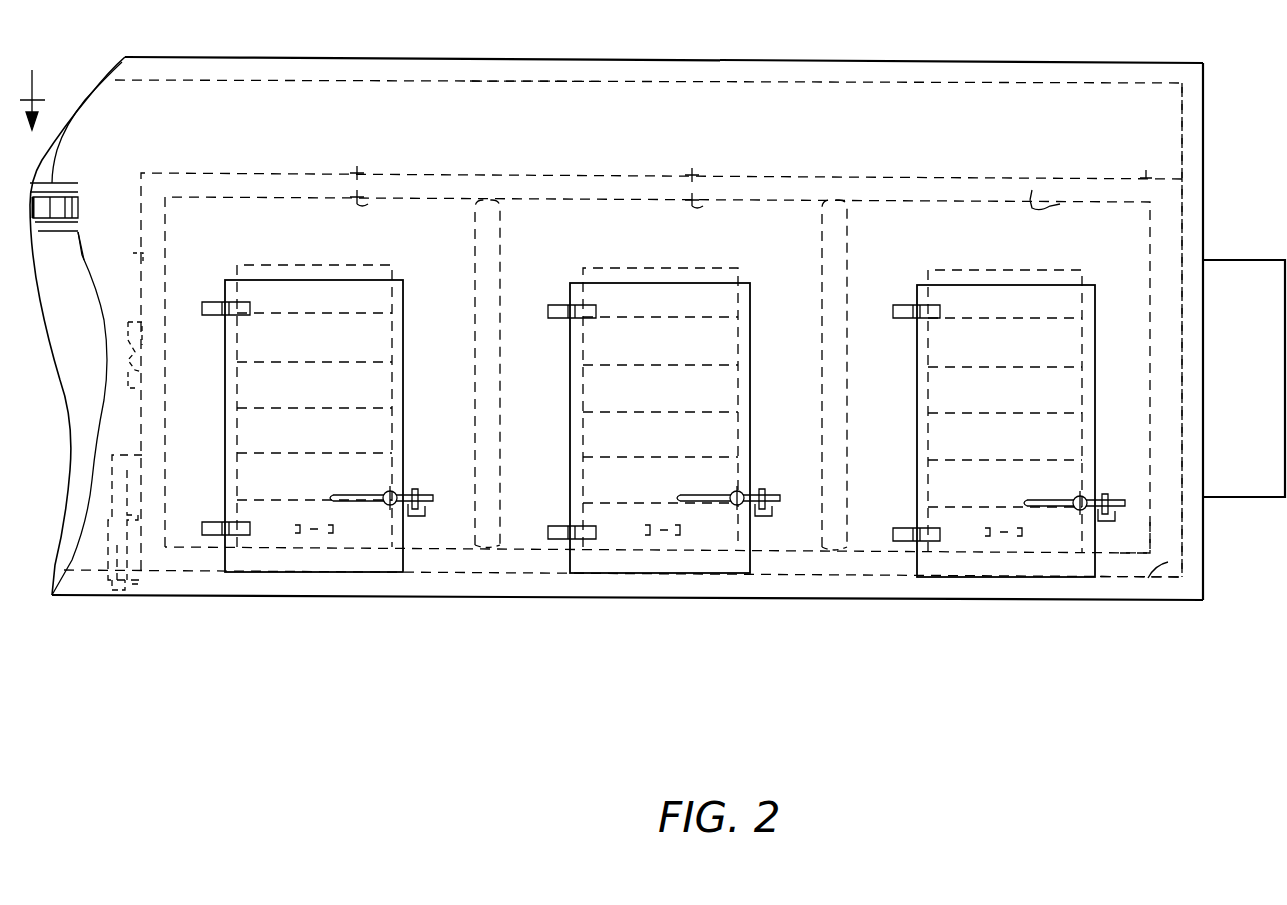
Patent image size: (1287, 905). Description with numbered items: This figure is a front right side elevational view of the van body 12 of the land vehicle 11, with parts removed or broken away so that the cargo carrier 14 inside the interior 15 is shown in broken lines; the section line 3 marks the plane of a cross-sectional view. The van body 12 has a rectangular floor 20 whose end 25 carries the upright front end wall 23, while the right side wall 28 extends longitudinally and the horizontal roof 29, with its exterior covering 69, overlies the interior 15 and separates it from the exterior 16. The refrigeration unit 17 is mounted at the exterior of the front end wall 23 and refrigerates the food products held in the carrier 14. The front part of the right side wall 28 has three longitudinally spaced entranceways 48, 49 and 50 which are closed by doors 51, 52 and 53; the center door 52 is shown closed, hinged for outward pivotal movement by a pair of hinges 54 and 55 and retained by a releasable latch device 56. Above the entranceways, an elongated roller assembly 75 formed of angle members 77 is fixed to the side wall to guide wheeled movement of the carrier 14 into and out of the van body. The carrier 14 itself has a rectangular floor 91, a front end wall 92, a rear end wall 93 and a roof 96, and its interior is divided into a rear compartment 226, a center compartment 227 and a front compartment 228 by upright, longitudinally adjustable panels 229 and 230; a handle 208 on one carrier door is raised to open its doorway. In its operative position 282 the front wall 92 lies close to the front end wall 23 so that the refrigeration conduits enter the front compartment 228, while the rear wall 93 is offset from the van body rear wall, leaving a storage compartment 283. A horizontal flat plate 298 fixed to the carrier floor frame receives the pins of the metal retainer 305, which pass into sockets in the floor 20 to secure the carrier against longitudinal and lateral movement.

The section line 3- 3 is at (27, 100).
The land vehicle 11 is at (765, 62).
The van body 12 is at (398, 58).
The cargo carrier 14 is at (183, 169).
The interior 15 is at (84, 317).
The exterior 16 is at (640, 59).
The refrigeration unit 17 is at (1270, 259).
The floor 20 is at (63, 566).
The front end wall 23 is at (1205, 168).
The end of floor 25 is at (1172, 561).
The right side wall 28 is at (556, 40).
The roof 29 is at (178, 57).
The entranceway 48 is at (1089, 341).
The entranceway 49 is at (749, 344).
The entranceway 50 is at (398, 338).
The door 51 is at (1015, 284).
The center door 52 is at (660, 395).
The door 53 is at (325, 256).
The hinge 54 is at (558, 319).
The hinge 55 is at (560, 527).
The latch device 56 is at (777, 493).
The exterior covering 69 is at (276, 58).
The roller assembly 75 is at (66, 186).
The angle member 77 is at (48, 180).
The floor 91 is at (1140, 551).
The front end wall 92 is at (1195, 236).
The rear end wall 93 is at (143, 199).
The roof 96 is at (500, 175).
The handle 208 is at (660, 533).
The rear compartment 226 is at (356, 165).
The center compartment 227 is at (691, 167).
The front compartment 228 is at (1035, 178).
The rear panel 229 is at (474, 264).
The front panel 230 is at (863, 269).
The operative position 282 is at (1144, 171).
The storage compartment 283 is at (68, 268).
The flat plate 298 is at (138, 590).
The retainer 305 is at (140, 460).